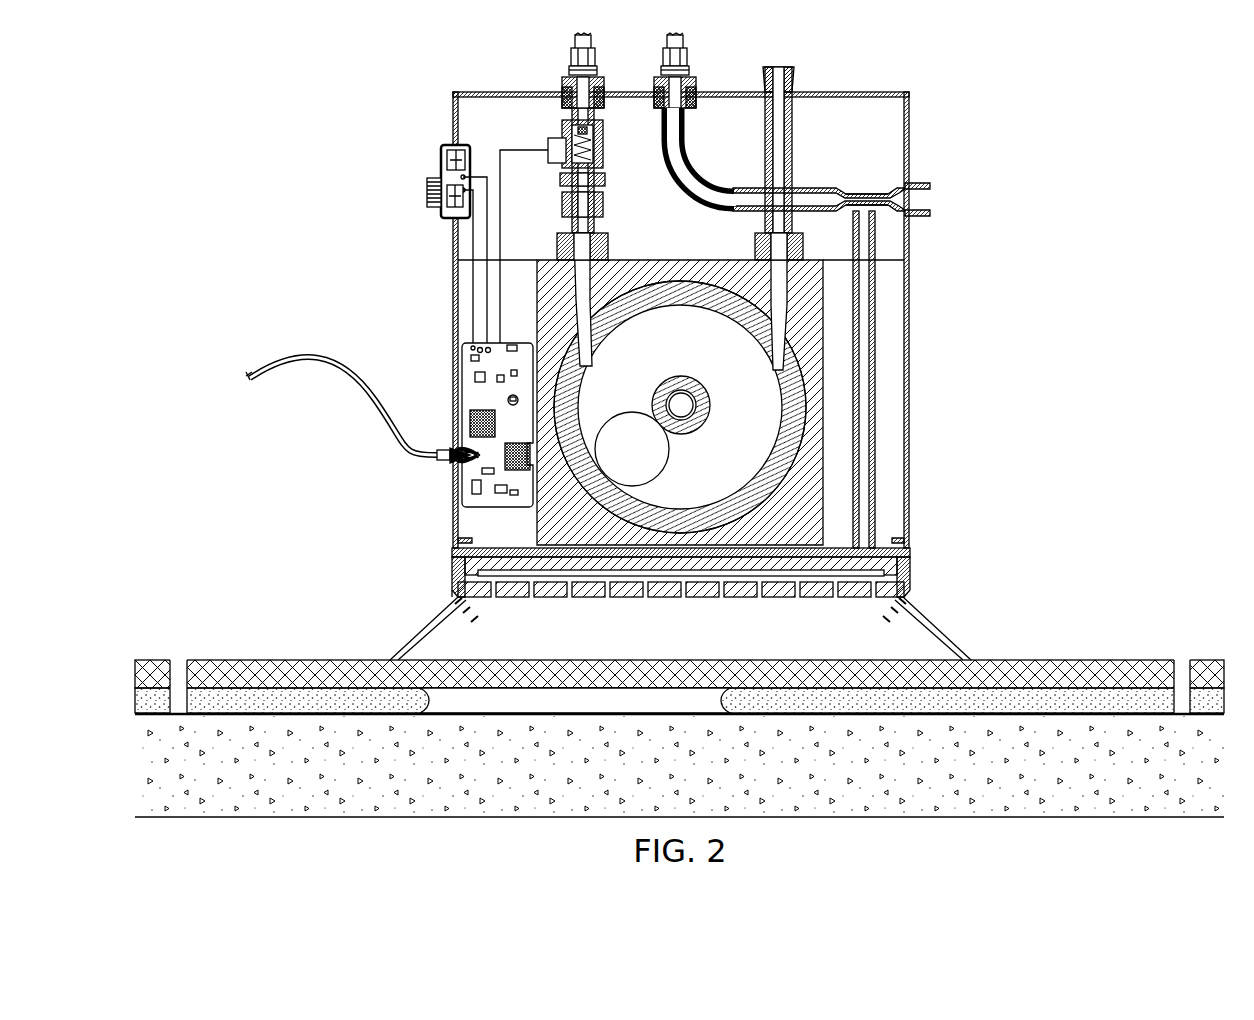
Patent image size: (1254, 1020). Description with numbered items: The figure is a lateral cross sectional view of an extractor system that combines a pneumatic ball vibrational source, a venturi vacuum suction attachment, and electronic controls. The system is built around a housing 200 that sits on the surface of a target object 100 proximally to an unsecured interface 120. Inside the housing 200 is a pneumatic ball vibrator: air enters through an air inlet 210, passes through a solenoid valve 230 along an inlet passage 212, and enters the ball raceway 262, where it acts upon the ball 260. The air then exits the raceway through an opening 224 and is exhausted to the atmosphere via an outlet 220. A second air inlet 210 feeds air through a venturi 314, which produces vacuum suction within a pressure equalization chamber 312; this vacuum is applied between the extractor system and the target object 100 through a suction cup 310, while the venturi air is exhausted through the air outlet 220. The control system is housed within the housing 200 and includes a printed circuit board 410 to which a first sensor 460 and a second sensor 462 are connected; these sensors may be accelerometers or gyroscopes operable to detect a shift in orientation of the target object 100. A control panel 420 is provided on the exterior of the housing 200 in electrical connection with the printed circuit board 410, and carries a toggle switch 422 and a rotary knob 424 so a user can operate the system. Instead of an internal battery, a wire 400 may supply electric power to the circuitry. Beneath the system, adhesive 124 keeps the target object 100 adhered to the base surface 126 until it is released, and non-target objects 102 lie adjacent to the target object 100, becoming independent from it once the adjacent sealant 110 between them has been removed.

The target object 100 is at (1060, 660).
The non-target object 102 is at (1202, 659).
The adjacent sealant 110 is at (182, 659).
The unsecured interface 120 is at (549, 710).
The adhesive 124 is at (274, 710).
The base surface 126 is at (664, 758).
The housing 200 is at (909, 146).
The air inlet 210 is at (591, 40).
The inlet passage 212 is at (590, 366).
The outlet 220 is at (796, 72).
The opening 224 is at (776, 370).
The solenoid valve 230 is at (603, 152).
The ball 260 is at (617, 460).
The ball raceway 262 is at (710, 460).
The suction cup 310 is at (940, 632).
The pressure equalization chamber 312 is at (892, 572).
The venturi 314 is at (868, 192).
The wire 400 is at (308, 350).
The printed circuit board 410 is at (480, 505).
The control panel 420 is at (444, 217).
The toggle switch 422 is at (445, 160).
The rotary knob 424 is at (427, 192).
The first sensor 460 is at (470, 416).
The second sensor 462 is at (468, 468).